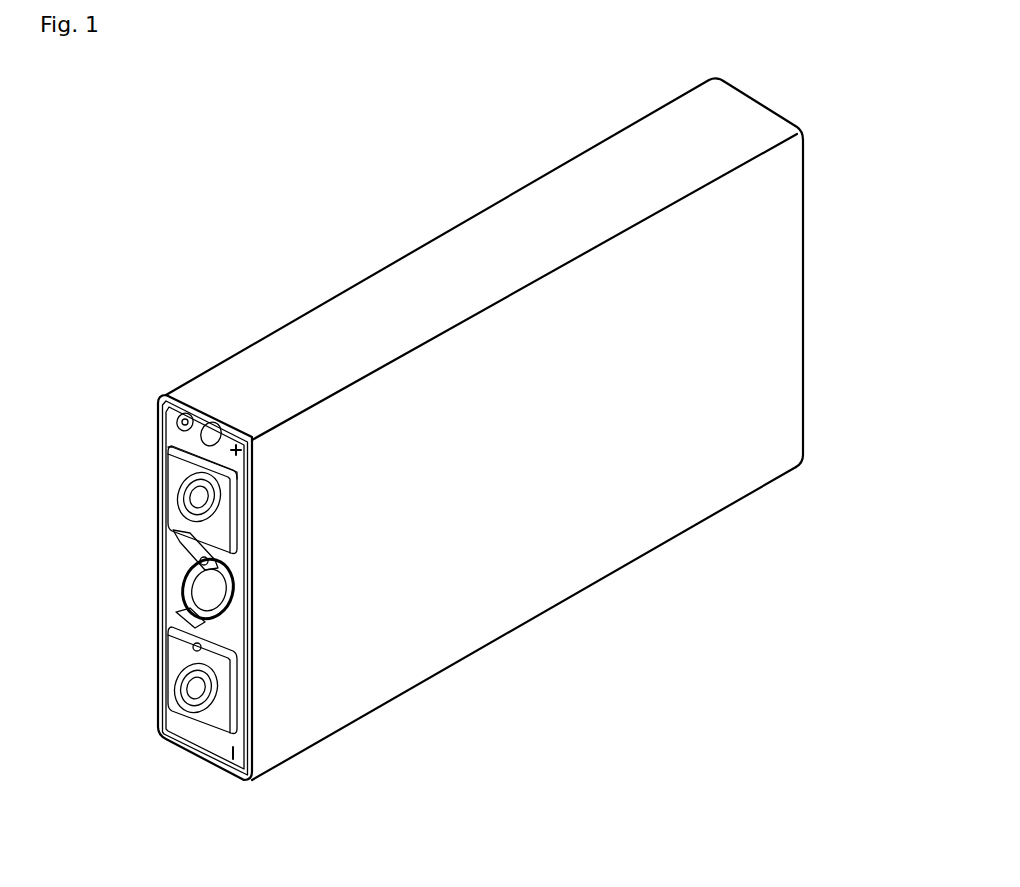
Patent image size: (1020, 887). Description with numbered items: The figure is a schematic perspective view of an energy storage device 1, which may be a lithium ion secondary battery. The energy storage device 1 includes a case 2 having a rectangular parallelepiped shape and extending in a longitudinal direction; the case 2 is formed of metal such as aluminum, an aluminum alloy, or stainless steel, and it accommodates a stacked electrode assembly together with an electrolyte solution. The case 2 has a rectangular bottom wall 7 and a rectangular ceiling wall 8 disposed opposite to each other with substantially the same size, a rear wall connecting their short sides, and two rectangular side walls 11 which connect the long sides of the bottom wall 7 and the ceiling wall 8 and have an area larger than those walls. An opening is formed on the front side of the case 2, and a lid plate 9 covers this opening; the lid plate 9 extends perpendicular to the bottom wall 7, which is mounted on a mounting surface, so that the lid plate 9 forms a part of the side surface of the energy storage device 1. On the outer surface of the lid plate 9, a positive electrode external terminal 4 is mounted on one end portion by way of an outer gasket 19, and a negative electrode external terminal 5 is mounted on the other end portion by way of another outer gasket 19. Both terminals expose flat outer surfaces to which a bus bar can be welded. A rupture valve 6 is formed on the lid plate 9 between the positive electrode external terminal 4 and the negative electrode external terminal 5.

The energy storage device 1 is at (168, 165).
The case 2 is at (477, 212).
The positive electrode external terminal 4 is at (170, 512).
The negative electrode external terminal 5 is at (175, 650).
The rupture valve 6 is at (180, 583).
The bottom wall 7 is at (437, 675).
The ceiling wall 8 is at (328, 312).
The lid plate 9 is at (175, 600).
The side wall 11 is at (578, 573).
The outer gasket 19 is at (172, 448).